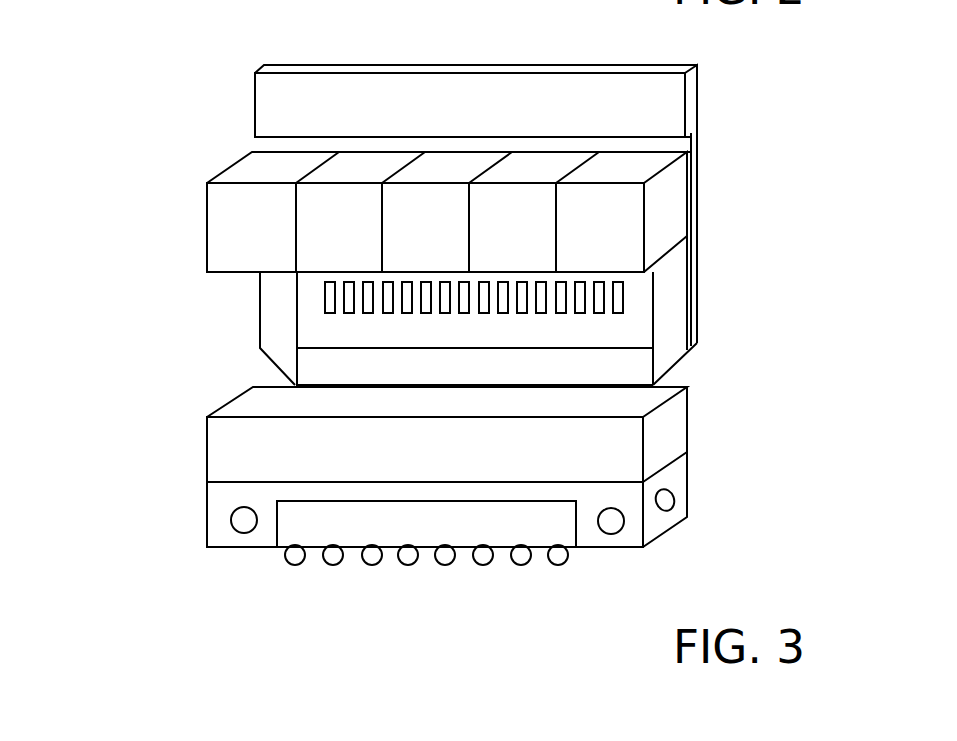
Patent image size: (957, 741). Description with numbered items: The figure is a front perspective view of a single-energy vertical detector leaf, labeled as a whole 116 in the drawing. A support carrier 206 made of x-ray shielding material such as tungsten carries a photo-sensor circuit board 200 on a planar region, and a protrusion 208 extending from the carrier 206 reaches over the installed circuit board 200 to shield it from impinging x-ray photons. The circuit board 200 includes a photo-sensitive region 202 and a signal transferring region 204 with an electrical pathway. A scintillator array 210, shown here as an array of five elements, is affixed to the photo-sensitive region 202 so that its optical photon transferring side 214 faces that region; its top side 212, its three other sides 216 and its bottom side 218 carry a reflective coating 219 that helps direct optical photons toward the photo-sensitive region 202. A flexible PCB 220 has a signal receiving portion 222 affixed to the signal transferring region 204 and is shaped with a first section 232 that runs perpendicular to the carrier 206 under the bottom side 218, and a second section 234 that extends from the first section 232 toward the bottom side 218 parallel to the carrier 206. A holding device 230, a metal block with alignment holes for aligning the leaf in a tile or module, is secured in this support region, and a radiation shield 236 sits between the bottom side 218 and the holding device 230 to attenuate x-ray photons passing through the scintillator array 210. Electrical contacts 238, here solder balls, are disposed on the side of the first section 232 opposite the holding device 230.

The optical transceiver module 116 is at (127, 85).
The photo-sensor circuit board 200 is at (692, 160).
The photo-sensitive region 202 is at (693, 188).
The signal transferring region 204 is at (693, 323).
The support carrier 206 is at (693, 98).
The protrusion 208 is at (255, 72).
The scintillator array 210 is at (242, 228).
The top side 212 is at (250, 176).
The optical photon transferring side 214 is at (693, 217).
The other sides 216 is at (205, 205).
The bottom side 218 is at (660, 263).
The reflective coating 219 is at (207, 262).
The flexible PCB 220 is at (322, 371).
The signal receiving portion 222 is at (325, 298).
The holding device 230 is at (207, 518).
The first section 232 is at (388, 549).
The second section 234 is at (462, 530).
The radiation shield 236 is at (207, 418).
The electrical contacts 238 is at (332, 564).